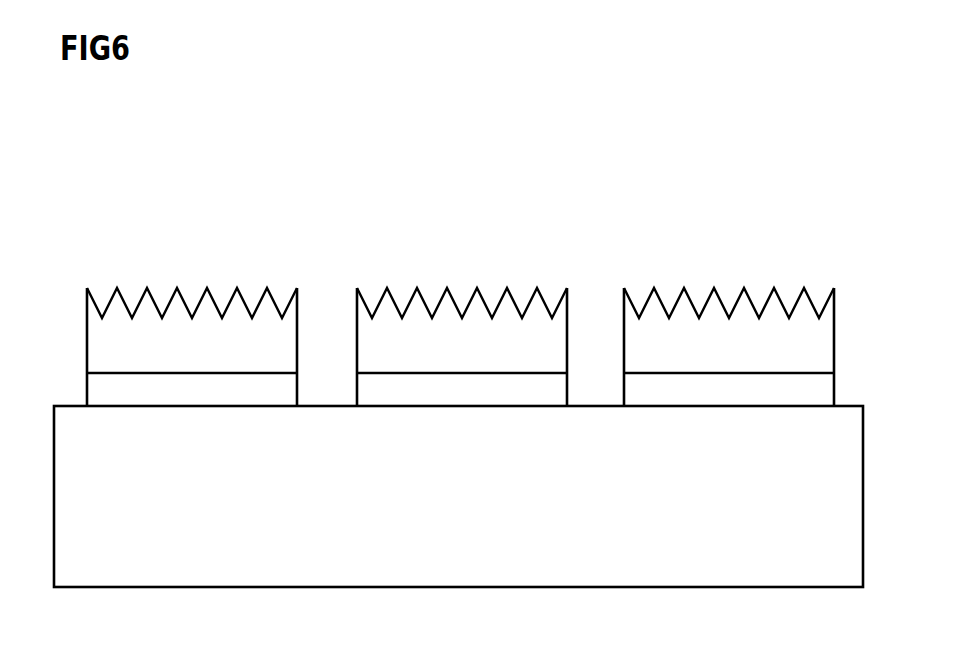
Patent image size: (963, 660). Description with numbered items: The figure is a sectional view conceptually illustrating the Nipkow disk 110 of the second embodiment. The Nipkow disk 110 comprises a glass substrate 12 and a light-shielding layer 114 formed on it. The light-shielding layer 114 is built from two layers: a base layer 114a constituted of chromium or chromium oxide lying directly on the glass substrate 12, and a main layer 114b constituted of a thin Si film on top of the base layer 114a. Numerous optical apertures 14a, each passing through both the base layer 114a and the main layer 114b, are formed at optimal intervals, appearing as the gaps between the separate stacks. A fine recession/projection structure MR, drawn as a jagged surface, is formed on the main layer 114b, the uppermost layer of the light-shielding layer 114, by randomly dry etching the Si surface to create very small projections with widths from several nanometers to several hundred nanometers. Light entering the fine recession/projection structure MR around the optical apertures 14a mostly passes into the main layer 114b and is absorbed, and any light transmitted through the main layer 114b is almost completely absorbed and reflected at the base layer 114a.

The Nipkow disk 110 is at (830, 102).
The glass substrate 12 is at (847, 492).
The light-shielding layer 114 is at (460, 335).
The base layer 114a is at (193, 397).
The main layer 114b is at (460, 262).
The fine recession/projection structure MR is at (190, 300).
The optical apertures 14a is at (298, 333).